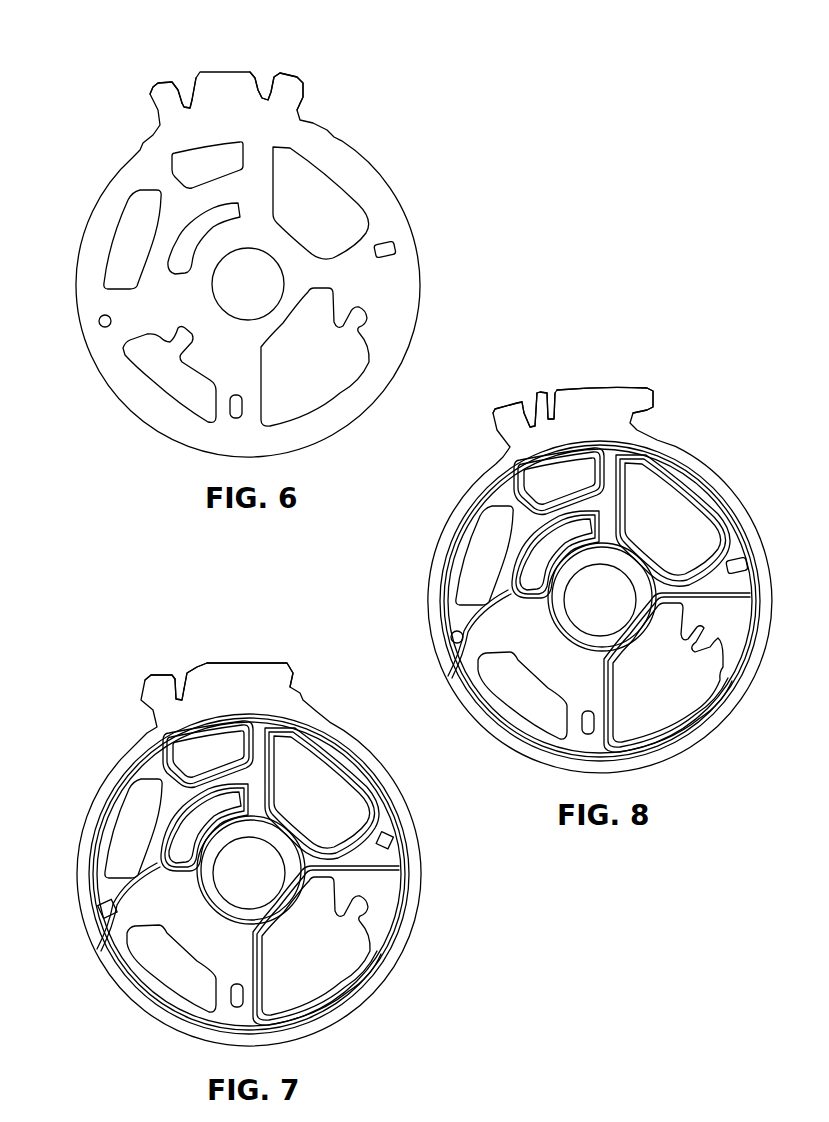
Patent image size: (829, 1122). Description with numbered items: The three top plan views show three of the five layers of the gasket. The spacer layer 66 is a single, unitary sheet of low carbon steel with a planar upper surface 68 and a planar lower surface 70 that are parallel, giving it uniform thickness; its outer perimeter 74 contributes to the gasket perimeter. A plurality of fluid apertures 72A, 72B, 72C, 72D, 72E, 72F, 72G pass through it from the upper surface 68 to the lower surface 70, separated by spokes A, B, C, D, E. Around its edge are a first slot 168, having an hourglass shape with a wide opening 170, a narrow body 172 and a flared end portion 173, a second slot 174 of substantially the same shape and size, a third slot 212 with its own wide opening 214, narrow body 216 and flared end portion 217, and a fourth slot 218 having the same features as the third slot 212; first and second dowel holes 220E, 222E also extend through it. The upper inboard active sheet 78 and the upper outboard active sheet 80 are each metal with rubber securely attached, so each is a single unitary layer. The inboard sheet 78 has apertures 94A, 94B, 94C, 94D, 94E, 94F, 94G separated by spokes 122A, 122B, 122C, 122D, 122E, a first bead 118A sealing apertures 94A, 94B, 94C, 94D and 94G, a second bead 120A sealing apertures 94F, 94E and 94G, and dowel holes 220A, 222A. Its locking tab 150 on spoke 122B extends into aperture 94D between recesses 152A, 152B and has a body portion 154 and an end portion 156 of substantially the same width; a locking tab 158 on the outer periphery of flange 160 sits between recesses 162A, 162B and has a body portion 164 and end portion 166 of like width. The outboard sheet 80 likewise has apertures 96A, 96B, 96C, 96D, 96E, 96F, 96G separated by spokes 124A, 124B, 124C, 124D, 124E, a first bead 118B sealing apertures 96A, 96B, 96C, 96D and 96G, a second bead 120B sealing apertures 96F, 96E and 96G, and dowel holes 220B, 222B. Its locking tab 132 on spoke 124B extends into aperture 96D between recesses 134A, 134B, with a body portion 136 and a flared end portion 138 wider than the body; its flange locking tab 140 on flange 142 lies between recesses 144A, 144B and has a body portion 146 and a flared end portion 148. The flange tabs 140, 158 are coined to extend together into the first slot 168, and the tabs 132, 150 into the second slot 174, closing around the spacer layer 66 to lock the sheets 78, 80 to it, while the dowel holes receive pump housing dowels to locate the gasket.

In FIG. 6, the spacer layer 66 is at (350, 140).
In FIG. 6, the planar upper surface 68 is at (390, 335).
In FIG. 6, the planar lower surface 70 is at (393, 302).
In FIG. 6, the outer perimeter 74 is at (377, 403).
In FIG. 6, the fluid aperture 72A is at (225, 170).
In FIG. 6, the fluid aperture 72B is at (145, 210).
In FIG. 6, the fluid aperture 72C is at (205, 403).
In FIG. 6, the fluid aperture 72D is at (310, 398).
In FIG. 6, the fluid aperture 72E is at (183, 257).
In FIG. 6, the fluid aperture 72F is at (338, 246).
In FIG. 6, the fluid aperture 72G is at (260, 295).
In FIG. 6, the first slot 168 is at (187, 98).
In FIG. 6, the wide opening 170 is at (160, 81).
In FIG. 6, the narrow body 172 is at (172, 100).
In FIG. 6, the flared end portion 173 is at (192, 110).
In FIG. 6, the second slot 174 is at (360, 327).
In FIG. 6, the third slot 212 is at (262, 82).
In FIG. 6, the wide opening 214 is at (273, 65).
In FIG. 6, the narrow body 216 is at (277, 82).
In FIG. 6, the flared end portion 217 is at (273, 105).
In FIG. 6, the fourth slot 218 is at (183, 333).
In FIG. 6, the first dowel hole 220E is at (235, 393).
In FIG. 6, the second dowel hole 222E is at (393, 248).
In FIG. 6, the spoke A is at (260, 184).
In FIG. 6, the spoke B is at (373, 272).
In FIG. 6, the spoke C is at (250, 412).
In FIG. 6, the spoke D is at (140, 295).
In FIG. 6, the spoke E is at (160, 183).
In FIG. 7, the upper inboard active sheet 78 is at (248, 854).
In FIG. 8, the upper outboard active sheet 80 is at (574, 580).
In FIG. 7, the aperture 94A is at (208, 754).
In FIG. 7, the aperture 94B is at (107, 828).
In FIG. 7, the aperture 94C is at (156, 937).
In FIG. 7, the aperture 94D is at (326, 945).
In FIG. 7, the aperture 94E is at (140, 833).
In FIG. 7, the aperture 94F is at (322, 792).
In FIG. 7, the aperture 94G is at (251, 870).
In FIG. 8, the aperture 96A is at (606, 456).
In FIG. 8, the aperture 96B is at (449, 555).
In FIG. 8, the aperture 96C is at (484, 664).
In FIG. 8, the aperture 96D is at (677, 672).
In FIG. 8, the aperture 96E is at (491, 564).
In FIG. 8, the aperture 96F is at (673, 519).
In FIG. 8, the aperture 96G is at (602, 597).
In FIG. 7, the first bead 118A is at (213, 874).
In FIG. 8, the first bead 118B is at (577, 601).
In FIG. 7, the second bead 120A is at (322, 774).
In FIG. 8, the second bead 120B is at (684, 511).
In FIG. 7, the spoke 122A is at (297, 801).
In FIG. 7, the spoke 122B is at (425, 854).
In FIG. 7, the spoke 122C is at (176, 1037).
In FIG. 7, the spoke 122D is at (72, 920).
In FIG. 7, the spoke 122E is at (179, 751).
In FIG. 8, the spoke 124A is at (653, 517).
In FIG. 8, the spoke 124B is at (776, 571).
In FIG. 8, the spoke 124C is at (524, 761).
In FIG. 8, the spoke 124D is at (431, 645).
In FIG. 8, the spoke 124E is at (528, 477).
In FIG. 8, the locking tab 132 is at (751, 682).
In FIG. 8, the recess 134A is at (711, 614).
In FIG. 8, the recess 134B is at (762, 666).
In FIG. 8, the body portion 136 is at (755, 647).
In FIG. 8, the end portion 138 is at (658, 665).
In FIG. 8, the flange locking tab 140 is at (578, 390).
In FIG. 8, the flange 142 is at (610, 379).
In FIG. 8, the recess 144A is at (497, 387).
In FIG. 8, the recess 144B is at (563, 367).
In FIG. 8, the body portion 146 is at (577, 411).
In FIG. 8, the end portion 148 is at (523, 380).
In FIG. 7, the locking tab 150 is at (403, 945).
In FIG. 7, the recess 152A is at (411, 912).
In FIG. 7, the recess 152B is at (417, 929).
In FIG. 7, the body portion 154 is at (310, 938).
In FIG. 7, the end portion 156 is at (327, 953).
In FIG. 7, the locking tab 158 is at (198, 666).
In FIG. 7, the flange 160 is at (258, 648).
In FIG. 7, the recess 162A is at (149, 657).
In FIG. 7, the recess 162B is at (228, 662).
In FIG. 7, the body portion 164 is at (228, 686).
In FIG. 7, the end portion 166 is at (185, 640).
In FIG. 7, the first dowel hole 220A is at (156, 1005).
In FIG. 8, the first dowel hole 220B is at (632, 752).
In FIG. 7, the second dowel hole 222A is at (424, 830).
In FIG. 8, the second dowel hole 222B is at (773, 551).